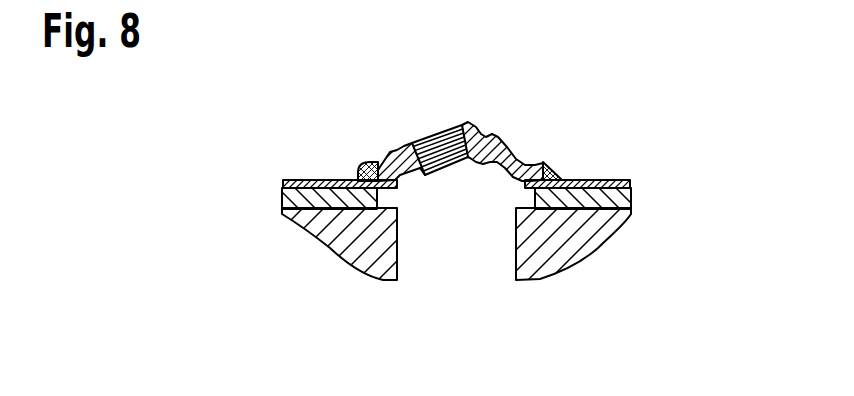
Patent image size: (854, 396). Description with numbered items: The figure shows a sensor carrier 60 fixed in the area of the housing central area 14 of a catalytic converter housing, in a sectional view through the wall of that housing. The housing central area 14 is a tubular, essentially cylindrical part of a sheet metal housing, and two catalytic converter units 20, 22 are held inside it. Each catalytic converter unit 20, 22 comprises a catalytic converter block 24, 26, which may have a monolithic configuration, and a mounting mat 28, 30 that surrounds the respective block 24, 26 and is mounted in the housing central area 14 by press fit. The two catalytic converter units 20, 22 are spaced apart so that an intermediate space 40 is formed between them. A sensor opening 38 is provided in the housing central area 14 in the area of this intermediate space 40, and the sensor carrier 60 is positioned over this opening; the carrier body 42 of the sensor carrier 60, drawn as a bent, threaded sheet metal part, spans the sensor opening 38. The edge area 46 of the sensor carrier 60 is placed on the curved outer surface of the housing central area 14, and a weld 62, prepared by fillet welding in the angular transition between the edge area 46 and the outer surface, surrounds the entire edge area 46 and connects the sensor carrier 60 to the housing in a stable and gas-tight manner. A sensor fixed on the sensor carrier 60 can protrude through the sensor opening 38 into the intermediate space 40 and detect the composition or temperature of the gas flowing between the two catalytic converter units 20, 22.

The housing central area 14 is at (597, 178).
The catalytic converter unit 20 is at (288, 258).
The catalytic converter unit 22 is at (628, 245).
The catalytic converter block 24 is at (310, 220).
The catalytic converter block 26 is at (553, 250).
The mounting mat 28 is at (333, 197).
The mounting mat 30 is at (615, 200).
The sensor opening 38 is at (397, 181).
The intermediate space 40 is at (470, 247).
The contact spring strip 42 is at (500, 132).
The edge area 46 is at (374, 172).
The sensor carrier 60 is at (468, 112).
The weld 62 is at (557, 168).